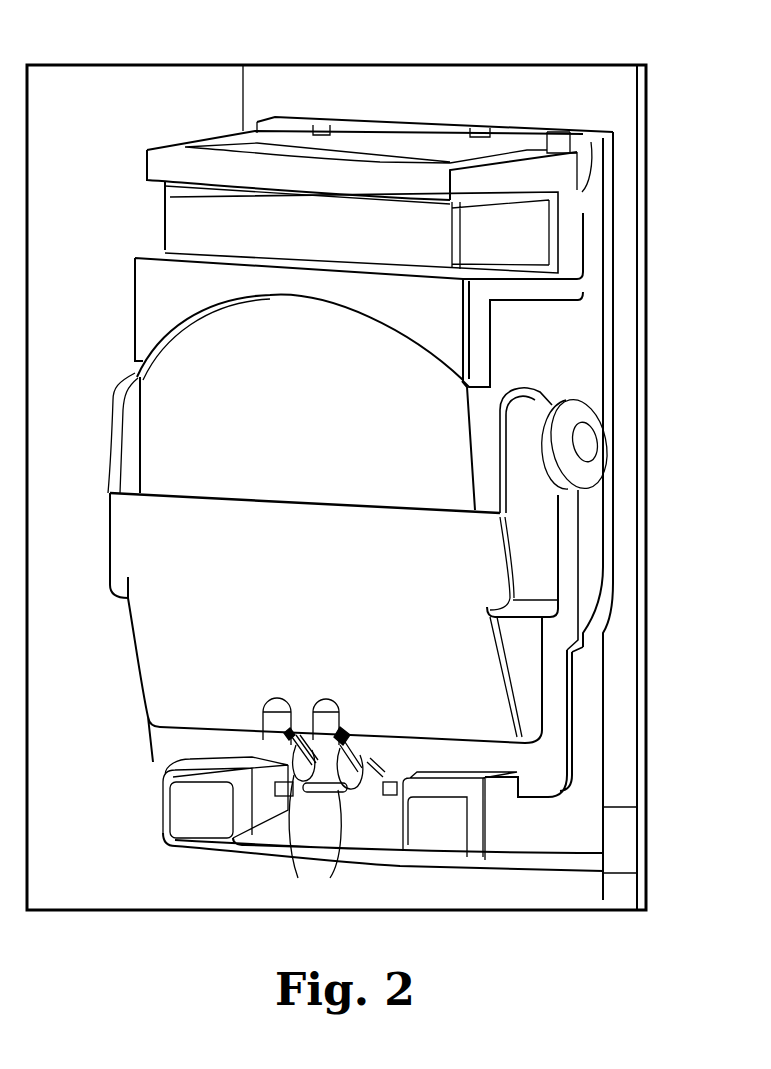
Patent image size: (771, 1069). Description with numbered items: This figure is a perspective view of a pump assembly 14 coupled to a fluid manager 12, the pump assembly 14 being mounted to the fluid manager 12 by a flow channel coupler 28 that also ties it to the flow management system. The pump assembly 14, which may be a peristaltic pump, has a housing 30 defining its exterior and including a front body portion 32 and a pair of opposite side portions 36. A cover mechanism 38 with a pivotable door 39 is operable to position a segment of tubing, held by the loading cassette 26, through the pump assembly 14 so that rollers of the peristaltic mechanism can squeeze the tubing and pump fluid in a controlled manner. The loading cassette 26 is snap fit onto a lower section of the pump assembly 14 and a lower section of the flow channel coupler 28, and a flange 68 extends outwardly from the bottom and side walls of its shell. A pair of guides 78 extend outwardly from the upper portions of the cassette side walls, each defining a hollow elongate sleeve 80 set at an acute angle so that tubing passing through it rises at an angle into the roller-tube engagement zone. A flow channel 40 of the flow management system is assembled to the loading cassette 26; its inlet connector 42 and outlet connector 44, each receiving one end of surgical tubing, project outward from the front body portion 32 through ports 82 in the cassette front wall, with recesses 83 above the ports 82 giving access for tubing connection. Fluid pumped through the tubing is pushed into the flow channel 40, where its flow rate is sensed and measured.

The fluid manager 12 is at (620, 667).
The pump assembly 14 is at (133, 285).
The loading cassette 26 is at (324, 601).
The flow channel coupler 28 is at (586, 722).
The housing 30 is at (207, 357).
The front body portion 32 is at (325, 398).
The side portions 36 is at (165, 218).
The cover mechanism 38 is at (170, 167).
The pivotable door 39 is at (196, 137).
The flow channel 40 is at (392, 778).
The inlet connector 42 is at (345, 723).
The outlet connector 44 is at (265, 725).
The flange 68 is at (556, 777).
The guides 78 is at (583, 385).
The elongate sleeve 80 is at (590, 437).
The ports 82 is at (297, 840).
The recesses 83 is at (330, 705).